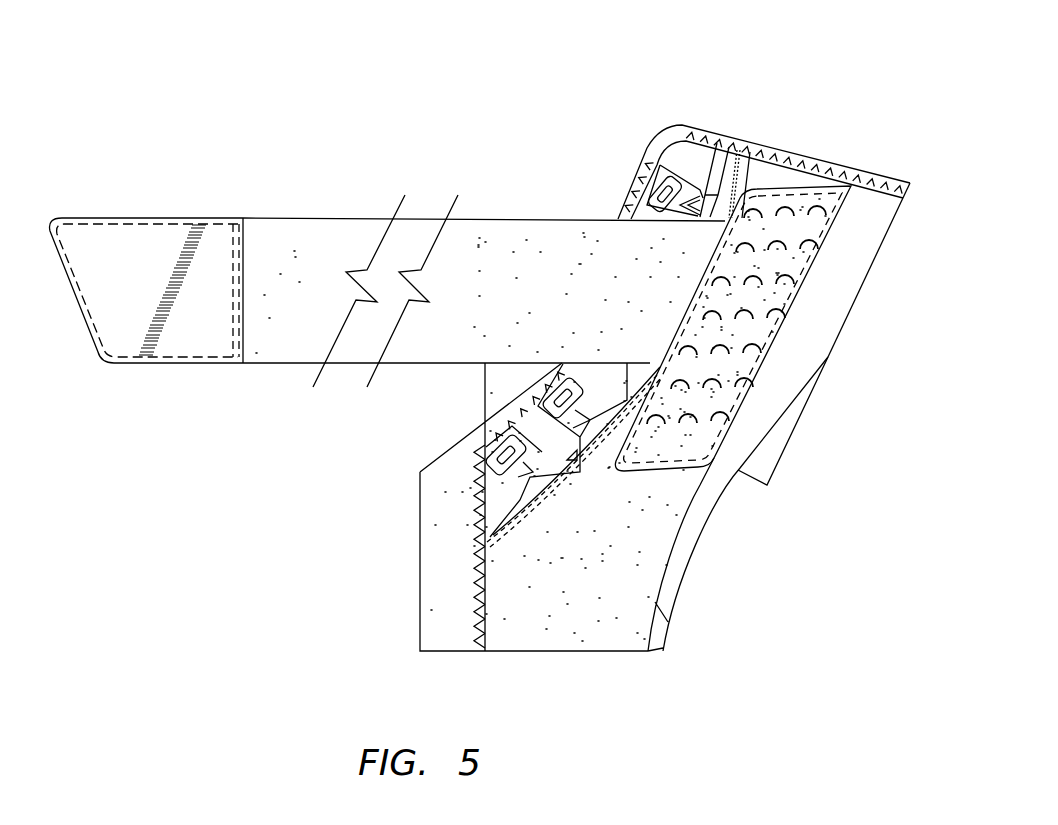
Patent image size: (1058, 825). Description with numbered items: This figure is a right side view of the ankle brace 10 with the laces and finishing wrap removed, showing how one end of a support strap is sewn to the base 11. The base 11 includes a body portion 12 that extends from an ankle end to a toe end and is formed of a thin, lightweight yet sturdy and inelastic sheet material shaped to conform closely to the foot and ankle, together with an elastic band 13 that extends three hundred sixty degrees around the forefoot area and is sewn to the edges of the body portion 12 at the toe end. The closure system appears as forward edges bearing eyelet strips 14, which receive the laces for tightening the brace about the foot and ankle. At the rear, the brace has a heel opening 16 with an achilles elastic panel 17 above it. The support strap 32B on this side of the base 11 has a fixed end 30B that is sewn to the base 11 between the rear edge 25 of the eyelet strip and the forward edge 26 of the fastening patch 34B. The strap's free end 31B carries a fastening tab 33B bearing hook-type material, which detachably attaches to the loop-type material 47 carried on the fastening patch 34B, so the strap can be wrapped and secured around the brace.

The ankle brace 10 is at (406, 100).
The base 11 is at (695, 162).
The body portion 12 is at (763, 175).
The elastic band 13 is at (433, 621).
The eyelet strips 14 is at (508, 462).
The heel opening 16 is at (688, 557).
The achilles elastic panel 17 is at (768, 453).
The rear edge of the eyelet strip 25 is at (717, 243).
The forward edge of the fastening patch 26 is at (707, 277).
The fixed end 30B is at (680, 320).
The free end 31B is at (200, 247).
The support strap 32B is at (465, 330).
The fastening tab 33B is at (163, 335).
The fastening patch 34B is at (780, 225).
The loop-type material 47 is at (788, 255).